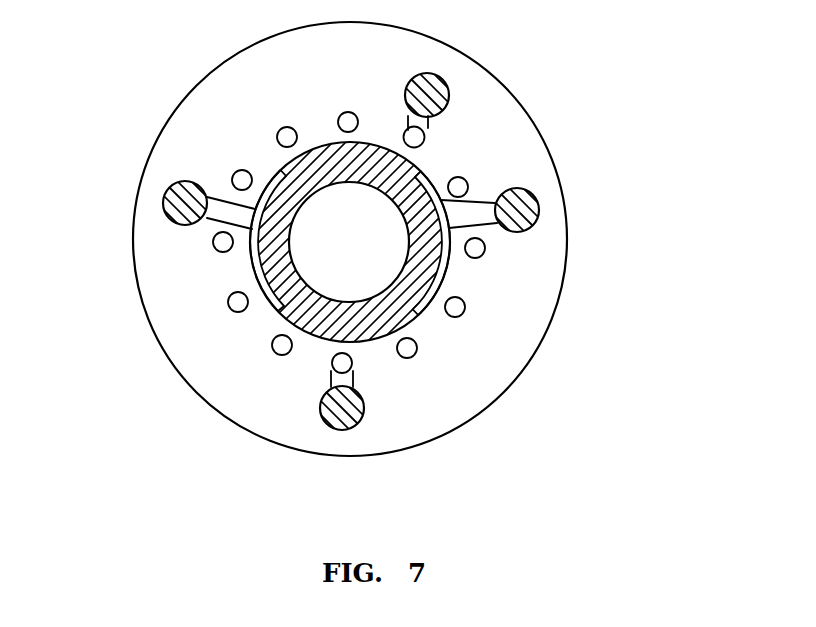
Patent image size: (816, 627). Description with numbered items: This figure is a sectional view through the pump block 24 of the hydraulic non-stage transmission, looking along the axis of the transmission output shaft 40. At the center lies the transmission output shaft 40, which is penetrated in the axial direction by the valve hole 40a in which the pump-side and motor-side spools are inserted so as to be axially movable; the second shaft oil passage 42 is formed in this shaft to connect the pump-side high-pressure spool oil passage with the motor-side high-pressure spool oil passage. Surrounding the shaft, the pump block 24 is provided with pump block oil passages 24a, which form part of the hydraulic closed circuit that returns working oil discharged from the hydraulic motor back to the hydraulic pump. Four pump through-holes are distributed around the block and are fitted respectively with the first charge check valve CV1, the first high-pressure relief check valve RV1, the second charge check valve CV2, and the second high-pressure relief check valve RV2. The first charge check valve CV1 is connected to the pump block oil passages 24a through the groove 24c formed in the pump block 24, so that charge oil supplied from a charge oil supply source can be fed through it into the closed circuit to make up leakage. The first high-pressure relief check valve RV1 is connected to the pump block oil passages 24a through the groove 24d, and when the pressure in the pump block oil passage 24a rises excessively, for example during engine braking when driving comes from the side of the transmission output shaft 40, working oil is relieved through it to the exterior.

The pump block 24 is at (530, 128).
The pump block oil passages 24a is at (420, 140).
The groove 24c is at (352, 376).
The groove 24d is at (405, 118).
The transmission output shaft 40 is at (352, 227).
The valve hole 40a is at (382, 196).
The second shaft oil passage 42 is at (253, 265).
The first high-pressure relief check valve RV1 is at (437, 78).
The second high-pressure relief check valve RV2 is at (165, 215).
The first charge check valve CV1 is at (355, 427).
The second charge check valve CV2 is at (532, 195).